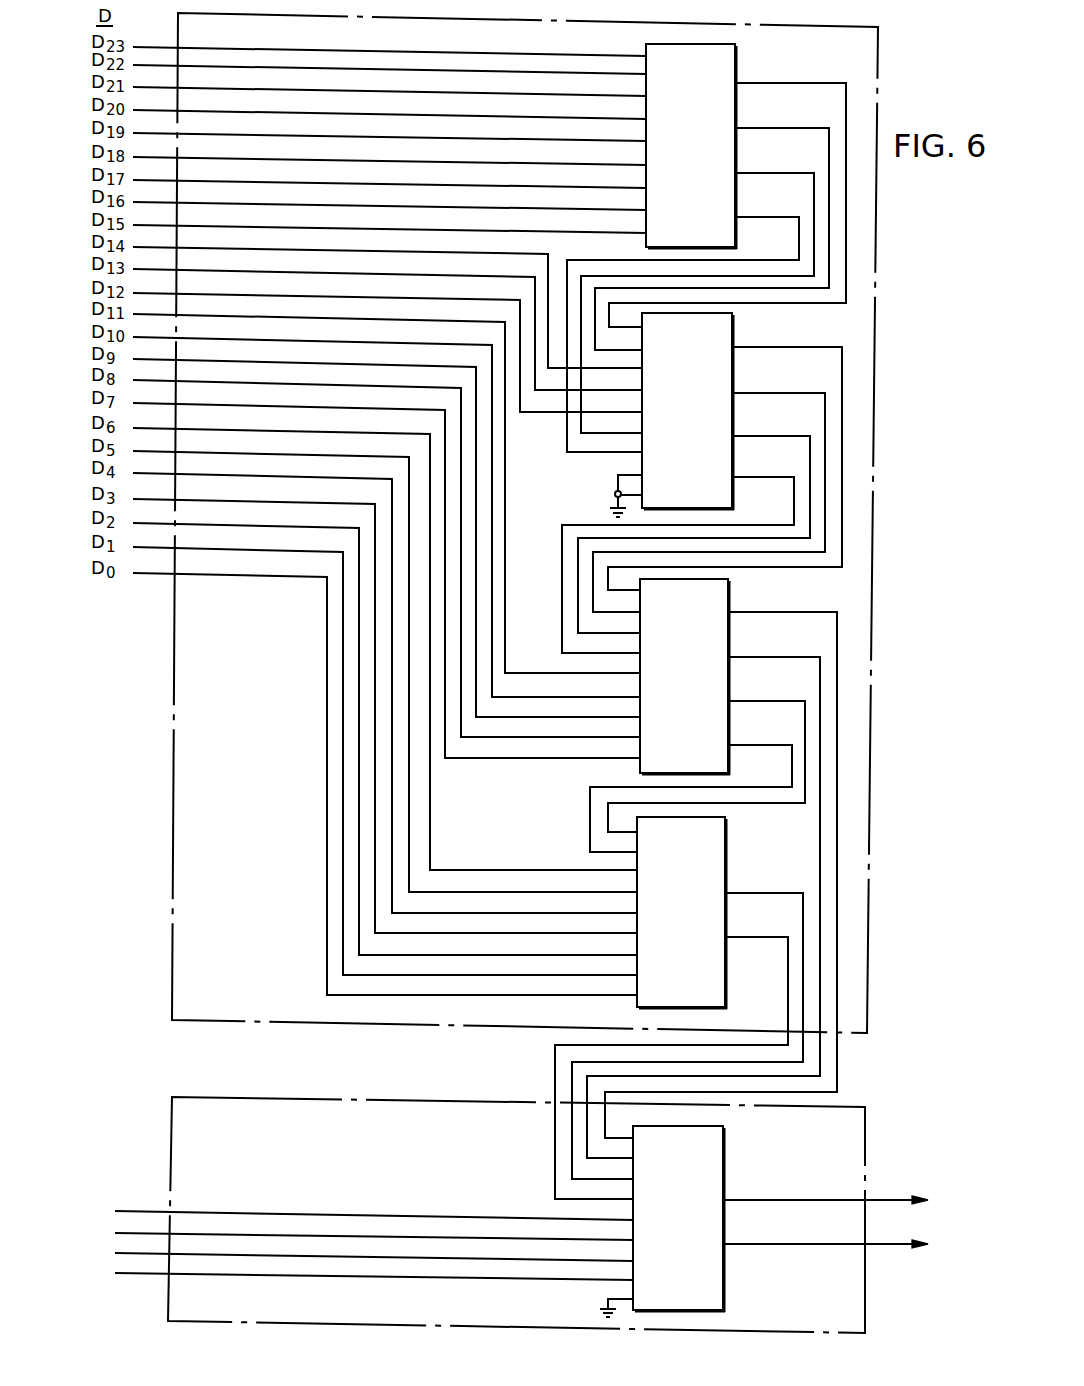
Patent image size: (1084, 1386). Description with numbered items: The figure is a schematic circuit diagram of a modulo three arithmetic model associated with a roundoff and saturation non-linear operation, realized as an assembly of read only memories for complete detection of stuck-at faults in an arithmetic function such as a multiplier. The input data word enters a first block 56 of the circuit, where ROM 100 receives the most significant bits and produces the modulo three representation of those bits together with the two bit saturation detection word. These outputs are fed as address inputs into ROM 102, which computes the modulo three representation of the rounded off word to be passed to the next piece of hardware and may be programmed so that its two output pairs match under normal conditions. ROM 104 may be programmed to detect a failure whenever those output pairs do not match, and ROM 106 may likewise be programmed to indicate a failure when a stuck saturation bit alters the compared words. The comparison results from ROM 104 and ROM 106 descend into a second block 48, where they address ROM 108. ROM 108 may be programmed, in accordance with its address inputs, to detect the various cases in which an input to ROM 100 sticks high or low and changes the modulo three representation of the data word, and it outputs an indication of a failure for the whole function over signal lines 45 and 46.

The ROM 100 is at (708, 170).
The ROM 102 is at (705, 434).
The ROM 104 is at (702, 698).
The ROM 106 is at (699, 932).
The ROM 108 is at (696, 1236).
The decoder logic block 56 is at (481, 1019).
The comparison logic block 48 is at (475, 1136).
The signal line 46 is at (893, 1197).
The signal line 45 is at (891, 1239).